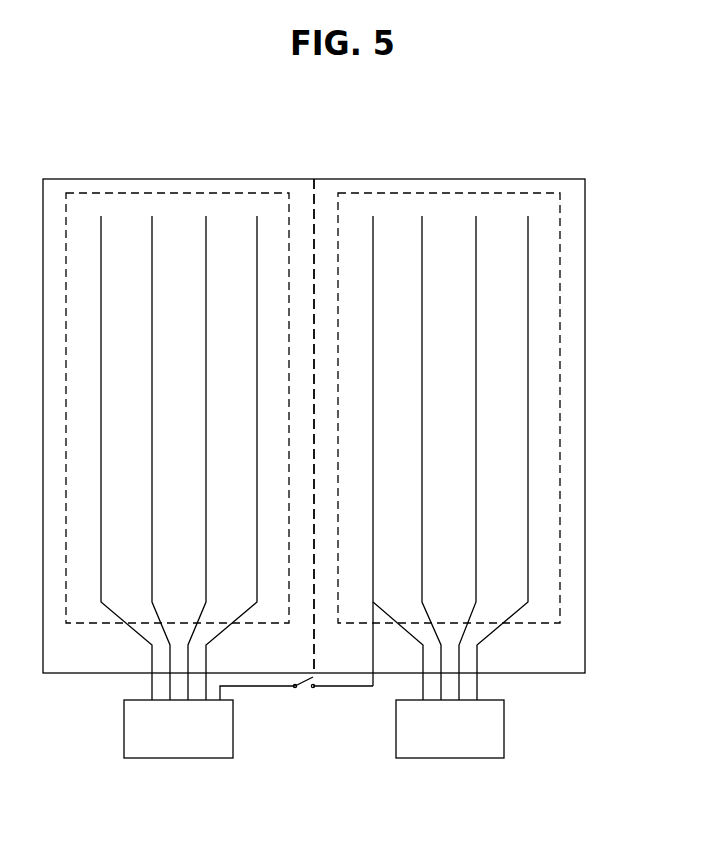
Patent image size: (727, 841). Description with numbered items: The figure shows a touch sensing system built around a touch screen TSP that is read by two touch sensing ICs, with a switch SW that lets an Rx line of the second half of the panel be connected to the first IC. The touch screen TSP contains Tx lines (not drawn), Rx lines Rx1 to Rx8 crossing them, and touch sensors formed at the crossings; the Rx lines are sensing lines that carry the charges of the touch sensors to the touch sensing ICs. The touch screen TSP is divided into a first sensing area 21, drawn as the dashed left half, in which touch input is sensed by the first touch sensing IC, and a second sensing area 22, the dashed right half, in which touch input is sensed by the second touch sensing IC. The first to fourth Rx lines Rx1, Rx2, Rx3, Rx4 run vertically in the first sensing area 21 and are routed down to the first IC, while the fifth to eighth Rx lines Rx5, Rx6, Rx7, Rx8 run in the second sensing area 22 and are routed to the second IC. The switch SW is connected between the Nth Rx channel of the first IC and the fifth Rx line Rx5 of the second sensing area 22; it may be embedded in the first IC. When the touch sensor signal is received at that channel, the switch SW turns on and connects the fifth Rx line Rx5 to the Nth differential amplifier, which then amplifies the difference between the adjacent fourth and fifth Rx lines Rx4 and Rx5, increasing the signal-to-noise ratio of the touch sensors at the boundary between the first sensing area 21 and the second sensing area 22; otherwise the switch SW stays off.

The first sensing area 21 is at (188, 193).
The second sensing area 22 is at (418, 193).
The touch screen TSP is at (570, 193).
The switch SW is at (296, 699).
The first Rx line Rx1 is at (101, 458).
The second Rx line Rx2 is at (137, 458).
The third Rx line Rx3 is at (182, 458).
The fourth Rx line Rx4 is at (231, 458).
The fifth Rx line Rx5 is at (372, 458).
The sixth Rx line Rx6 is at (409, 458).
The seventh Rx line Rx7 is at (453, 458).
The eighth Rx line Rx8 is at (502, 458).